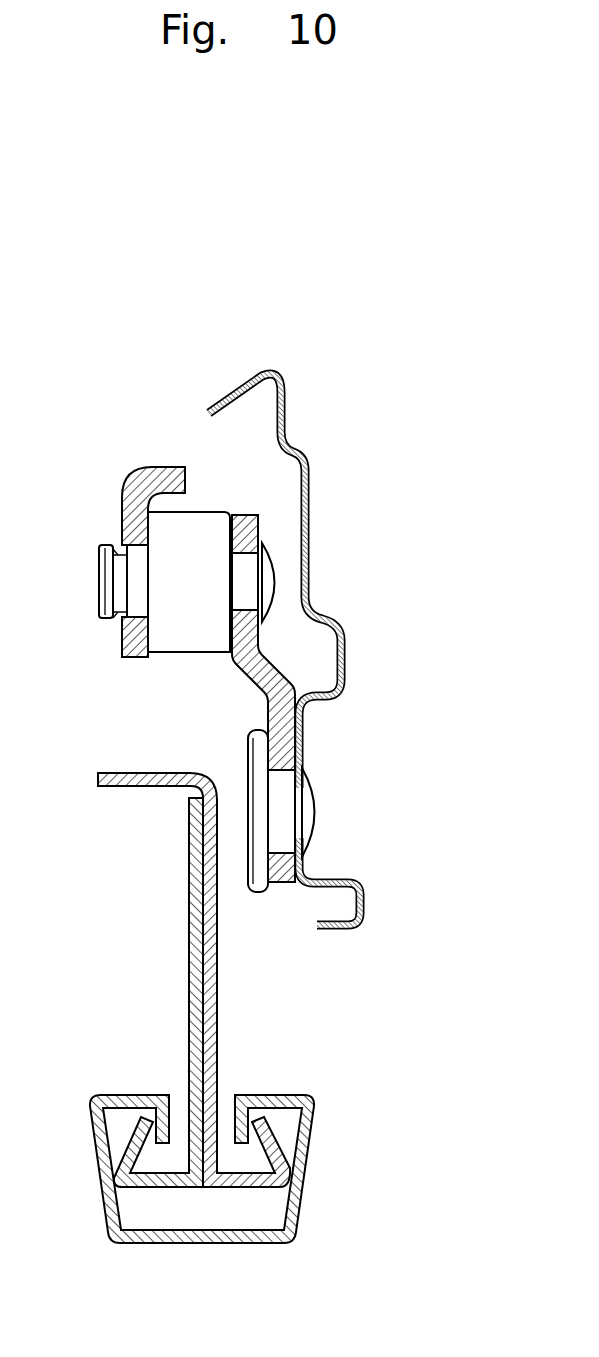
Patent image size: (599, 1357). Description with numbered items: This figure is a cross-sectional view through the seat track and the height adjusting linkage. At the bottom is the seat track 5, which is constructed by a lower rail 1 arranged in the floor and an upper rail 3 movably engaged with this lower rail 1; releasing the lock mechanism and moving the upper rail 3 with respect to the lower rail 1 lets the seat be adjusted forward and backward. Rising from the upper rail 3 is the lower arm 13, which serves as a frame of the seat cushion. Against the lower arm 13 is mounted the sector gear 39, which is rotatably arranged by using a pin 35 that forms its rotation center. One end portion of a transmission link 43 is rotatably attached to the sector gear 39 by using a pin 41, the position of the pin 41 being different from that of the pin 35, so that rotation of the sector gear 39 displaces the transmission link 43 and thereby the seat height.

The lower rail 1 is at (307, 1165).
The upper rail 3 is at (262, 1188).
The seat track 5 is at (367, 1209).
The lower arm 13 is at (288, 394).
The pin 35 is at (283, 813).
The sector gear 39 is at (288, 698).
The pin 41 is at (213, 560).
The transmission link 43 is at (123, 505).